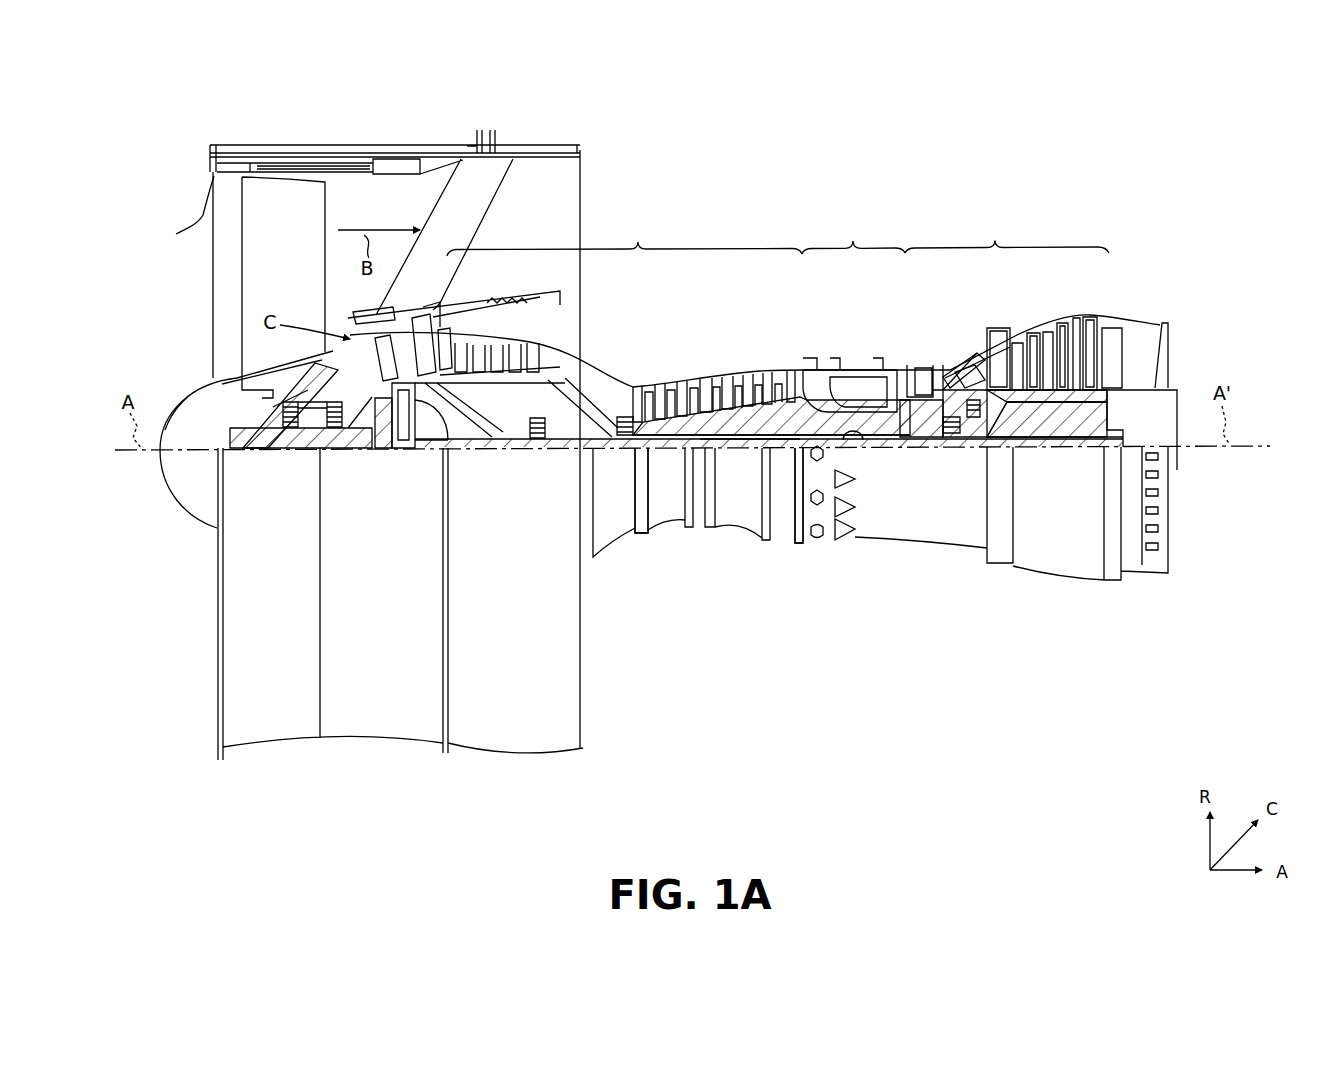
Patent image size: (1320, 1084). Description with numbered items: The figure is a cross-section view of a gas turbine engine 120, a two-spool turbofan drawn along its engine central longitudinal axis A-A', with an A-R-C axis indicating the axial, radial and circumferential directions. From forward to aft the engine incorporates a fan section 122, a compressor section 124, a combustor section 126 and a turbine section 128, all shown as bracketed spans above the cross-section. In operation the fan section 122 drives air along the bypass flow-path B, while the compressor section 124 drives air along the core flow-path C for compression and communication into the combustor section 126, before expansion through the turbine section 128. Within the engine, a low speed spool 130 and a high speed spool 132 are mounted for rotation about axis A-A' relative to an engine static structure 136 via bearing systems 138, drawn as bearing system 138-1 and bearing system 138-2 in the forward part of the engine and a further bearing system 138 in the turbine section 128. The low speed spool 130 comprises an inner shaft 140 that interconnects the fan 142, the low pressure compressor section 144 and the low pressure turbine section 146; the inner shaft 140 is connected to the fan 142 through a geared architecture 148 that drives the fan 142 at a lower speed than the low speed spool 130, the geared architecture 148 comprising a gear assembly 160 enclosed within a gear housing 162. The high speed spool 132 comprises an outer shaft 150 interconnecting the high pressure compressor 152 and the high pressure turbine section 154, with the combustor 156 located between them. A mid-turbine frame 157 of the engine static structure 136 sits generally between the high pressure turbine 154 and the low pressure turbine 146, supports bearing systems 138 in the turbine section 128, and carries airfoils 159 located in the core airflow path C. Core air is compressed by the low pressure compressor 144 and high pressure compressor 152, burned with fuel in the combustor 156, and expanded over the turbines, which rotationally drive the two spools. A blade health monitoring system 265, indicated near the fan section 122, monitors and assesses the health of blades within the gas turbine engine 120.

The gas turbine engine 120 is at (705, 148).
The fan section 122 is at (435, 130).
The compressor section 124 is at (624, 235).
The combustor section 126 is at (853, 234).
The turbine section 128 is at (1007, 233).
The low speed spool 130 is at (743, 460).
The high speed spool 132 is at (778, 412).
The engine static structure 136 is at (788, 528).
The bearing system 138 is at (965, 430).
The bearing system 138-1 is at (286, 448).
The bearing system 138-2 is at (537, 447).
The inner shaft 140 is at (596, 480).
The fan 142 is at (294, 273).
The low pressure compressor section 144 is at (520, 352).
The low pressure turbine section 146 is at (1055, 336).
The geared architecture 148 is at (399, 456).
The outer shaft 150 is at (853, 440).
The high pressure compressor 152 is at (710, 374).
The high pressure turbine section 154 is at (915, 365).
The combustor 156 is at (848, 388).
The mid-turbine frame 157 is at (957, 375).
The airfoils 159 is at (965, 378).
The gear assembly 160 is at (393, 440).
The gear housing 162 is at (448, 440).
The blade health monitoring system 265 is at (179, 215).